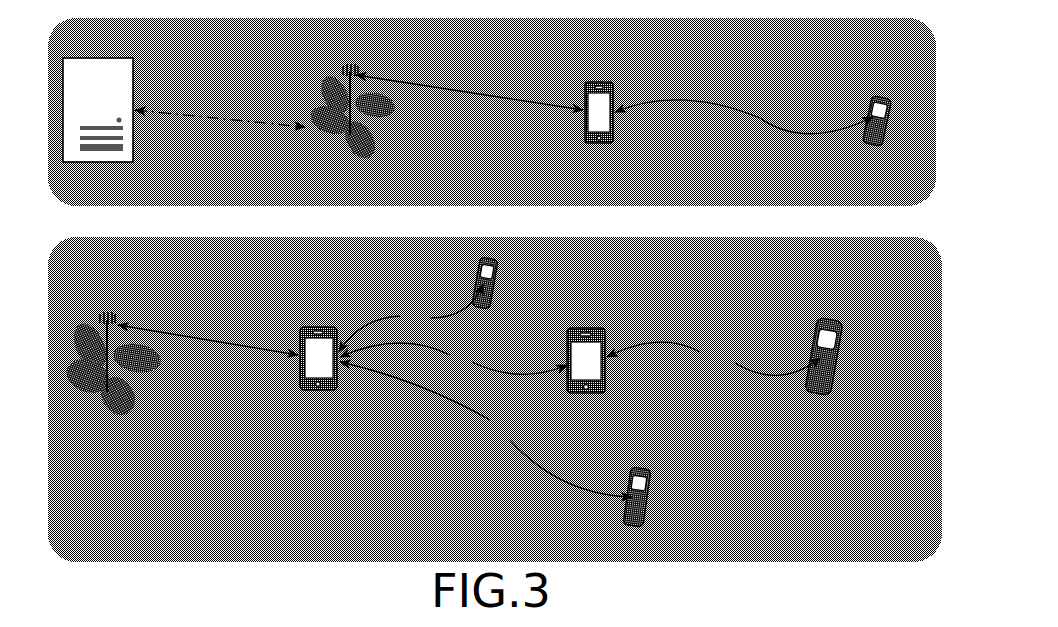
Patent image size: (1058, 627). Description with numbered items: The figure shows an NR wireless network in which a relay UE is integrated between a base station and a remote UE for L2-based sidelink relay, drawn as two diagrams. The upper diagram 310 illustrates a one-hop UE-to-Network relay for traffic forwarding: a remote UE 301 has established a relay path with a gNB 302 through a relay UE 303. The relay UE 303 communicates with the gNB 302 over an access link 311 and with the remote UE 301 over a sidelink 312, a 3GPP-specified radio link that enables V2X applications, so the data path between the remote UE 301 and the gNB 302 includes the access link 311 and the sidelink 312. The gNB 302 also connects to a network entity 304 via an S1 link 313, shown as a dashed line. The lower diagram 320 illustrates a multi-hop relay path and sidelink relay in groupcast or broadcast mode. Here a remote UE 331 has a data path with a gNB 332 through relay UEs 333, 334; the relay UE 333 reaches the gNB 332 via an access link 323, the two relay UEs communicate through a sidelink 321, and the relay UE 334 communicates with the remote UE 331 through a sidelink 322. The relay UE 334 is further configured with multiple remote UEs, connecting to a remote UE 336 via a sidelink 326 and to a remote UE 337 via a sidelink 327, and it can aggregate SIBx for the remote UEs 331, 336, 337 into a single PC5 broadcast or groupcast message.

The remote UE 301 is at (872, 96).
The gNB 302 is at (362, 72).
The relay UE 303 is at (599, 82).
The network entity 304 is at (134, 72).
The diagram 310 is at (467, 181).
The access link 311 is at (469, 92).
The sidelink 312 is at (744, 117).
The S1 link 313 is at (220, 116).
The diagram 320 is at (477, 543).
The sidelink 321 is at (453, 358).
The sidelink 322 is at (713, 358).
The access link 323 is at (208, 340).
The sidelink 326 is at (411, 318).
The sidelink 327 is at (486, 429).
The remote UE 331 is at (818, 322).
The gNB 332 is at (120, 324).
The relay UE 333 is at (581, 328).
The relay UE 334 is at (321, 327).
The remote UE 336 is at (480, 262).
The remote UE 337 is at (633, 468).